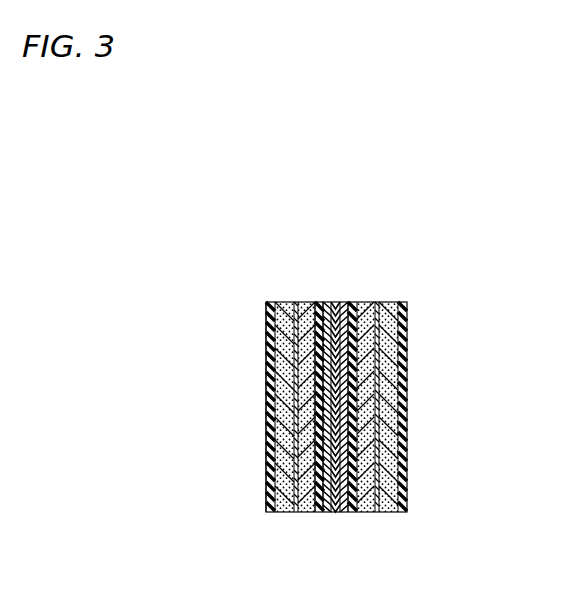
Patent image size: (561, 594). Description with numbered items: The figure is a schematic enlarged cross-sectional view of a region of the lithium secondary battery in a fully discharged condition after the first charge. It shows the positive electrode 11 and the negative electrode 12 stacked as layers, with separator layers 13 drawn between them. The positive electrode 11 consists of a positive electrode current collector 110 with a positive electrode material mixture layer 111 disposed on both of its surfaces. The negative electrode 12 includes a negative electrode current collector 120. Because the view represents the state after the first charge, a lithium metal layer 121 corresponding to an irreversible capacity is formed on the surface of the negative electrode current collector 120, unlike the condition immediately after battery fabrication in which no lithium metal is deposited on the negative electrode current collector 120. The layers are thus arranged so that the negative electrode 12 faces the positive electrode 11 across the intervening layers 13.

The positive electrode 11 is at (170, 229).
The positive electrode current collector 110 is at (290, 302).
The positive electrode material mixture layer 111 is at (272, 302).
The negative electrode 12 is at (358, 229).
The negative electrode current collector 120 is at (338, 302).
The lithium metal layer 121 is at (330, 302).
The separator layer 13 is at (322, 512).